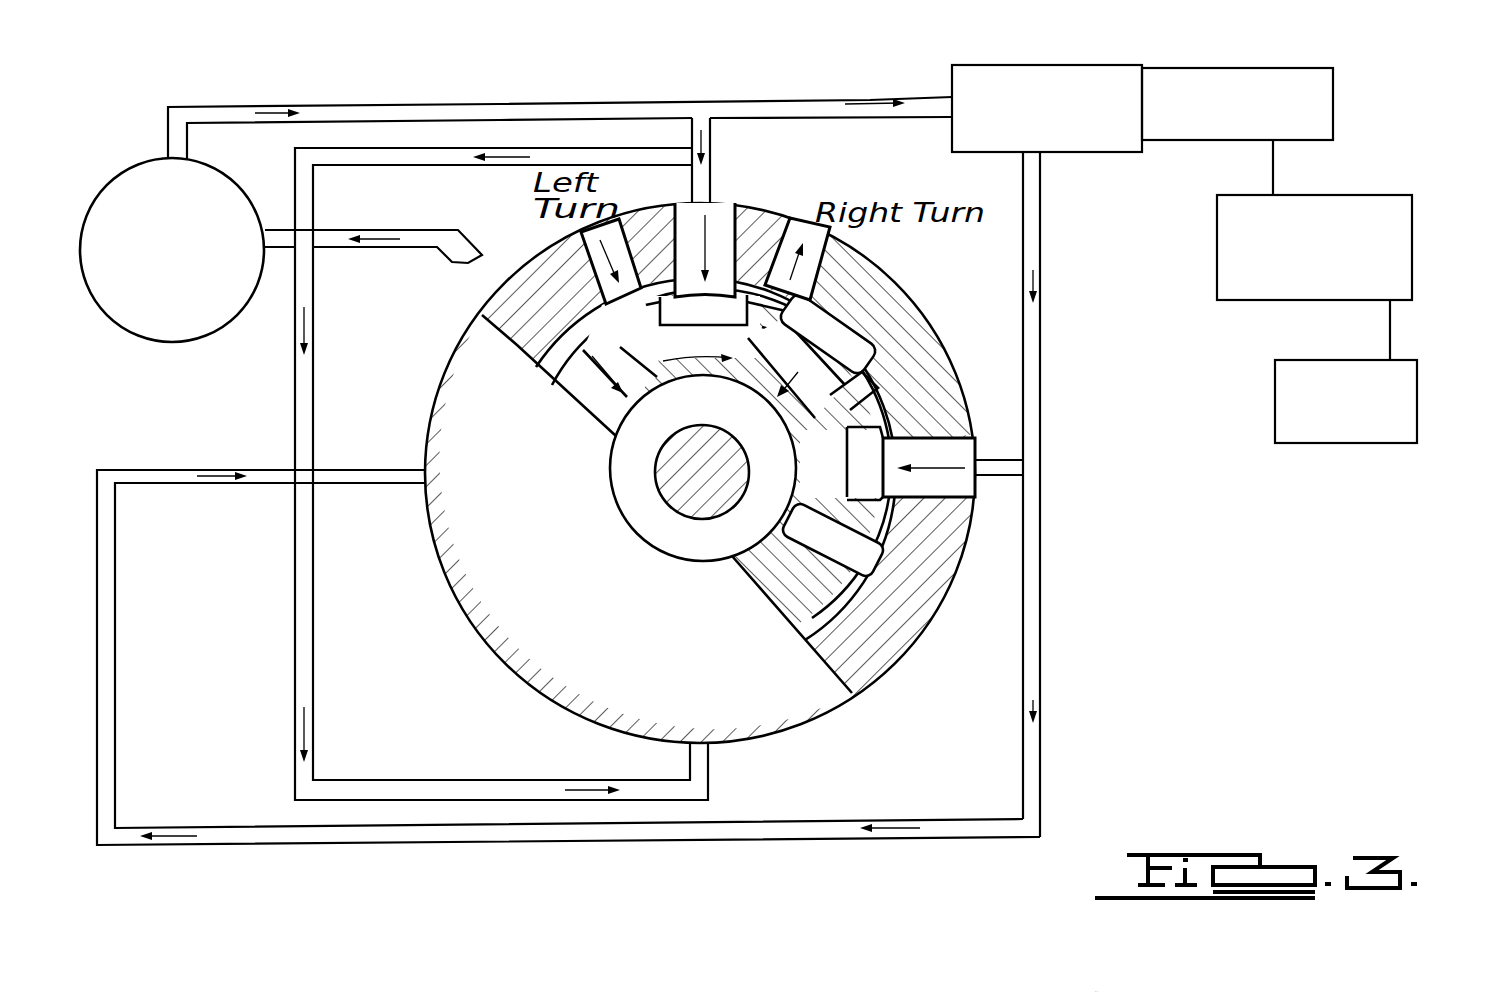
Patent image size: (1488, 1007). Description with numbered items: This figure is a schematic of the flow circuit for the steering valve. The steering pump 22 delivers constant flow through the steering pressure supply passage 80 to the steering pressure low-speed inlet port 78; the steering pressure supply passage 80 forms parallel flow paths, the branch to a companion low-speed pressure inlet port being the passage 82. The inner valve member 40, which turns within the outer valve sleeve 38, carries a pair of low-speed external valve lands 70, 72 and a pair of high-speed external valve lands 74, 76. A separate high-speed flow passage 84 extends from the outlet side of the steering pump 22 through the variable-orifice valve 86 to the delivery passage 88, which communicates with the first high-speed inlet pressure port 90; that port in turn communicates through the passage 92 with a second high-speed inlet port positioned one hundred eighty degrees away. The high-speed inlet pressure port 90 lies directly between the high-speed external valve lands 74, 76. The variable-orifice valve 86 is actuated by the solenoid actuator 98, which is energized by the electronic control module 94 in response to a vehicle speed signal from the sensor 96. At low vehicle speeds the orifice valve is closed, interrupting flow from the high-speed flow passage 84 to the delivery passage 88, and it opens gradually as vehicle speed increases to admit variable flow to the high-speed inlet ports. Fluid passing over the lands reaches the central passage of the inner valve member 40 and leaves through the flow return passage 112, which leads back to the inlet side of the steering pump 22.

The steering pump 22 is at (118, 185).
The outer valve sleeve 38 is at (920, 330).
The inner valve member 40 is at (800, 440).
The low-speed external valve land 70 is at (517, 345).
The low-speed external valve land 72 is at (793, 307).
The high-speed external valve land 74 is at (850, 403).
The high-speed external valve land 76 is at (865, 548).
The steering pressure low-speed inlet port 78 is at (722, 217).
The steering pressure supply passage 80 is at (668, 108).
The passage 82 is at (295, 550).
The high-speed flow passage 84 is at (925, 97).
The variable-orifice valve 86 is at (1103, 65).
The delivery passage 88 is at (1040, 417).
The high-speed inlet pressure port 90 is at (975, 440).
The passage 92 is at (685, 833).
The electronic control module 94 is at (1398, 195).
The sensor 96 is at (1417, 380).
The solenoid actuator 98 is at (1313, 68).
The flow return passage 112 is at (458, 262).